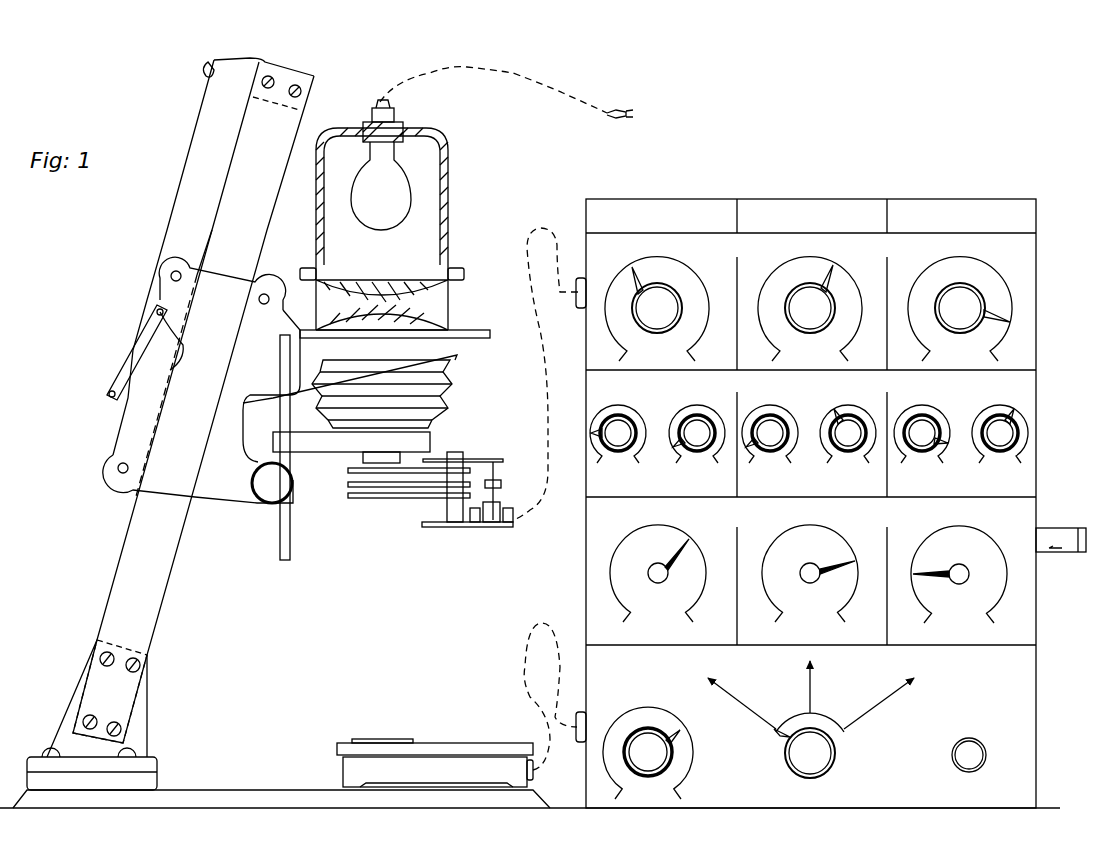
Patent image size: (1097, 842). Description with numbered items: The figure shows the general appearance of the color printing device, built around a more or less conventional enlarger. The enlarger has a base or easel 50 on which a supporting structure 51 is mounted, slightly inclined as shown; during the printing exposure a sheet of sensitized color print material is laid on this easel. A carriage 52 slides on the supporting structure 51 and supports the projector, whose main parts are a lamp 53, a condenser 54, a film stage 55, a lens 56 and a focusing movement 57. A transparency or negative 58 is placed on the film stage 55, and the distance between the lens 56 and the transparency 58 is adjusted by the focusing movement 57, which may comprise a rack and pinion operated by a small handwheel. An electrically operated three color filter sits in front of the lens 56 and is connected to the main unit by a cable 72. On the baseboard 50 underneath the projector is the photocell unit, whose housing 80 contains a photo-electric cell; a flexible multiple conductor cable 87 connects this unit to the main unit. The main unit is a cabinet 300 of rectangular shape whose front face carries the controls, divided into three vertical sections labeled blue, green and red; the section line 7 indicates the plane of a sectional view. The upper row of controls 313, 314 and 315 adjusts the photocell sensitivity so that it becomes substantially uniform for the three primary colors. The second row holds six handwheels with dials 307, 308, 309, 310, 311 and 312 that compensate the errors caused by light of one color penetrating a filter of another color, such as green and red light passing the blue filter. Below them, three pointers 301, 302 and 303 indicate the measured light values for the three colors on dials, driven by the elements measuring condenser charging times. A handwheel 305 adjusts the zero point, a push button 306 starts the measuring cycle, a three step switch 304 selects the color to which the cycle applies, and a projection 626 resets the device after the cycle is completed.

The section line 7 is at (586, 573).
The base or easel 50 is at (216, 775).
The supporting structure 51 is at (128, 812).
The carriage 52 is at (128, 404).
The lamp 53 is at (474, 166).
The condenser 54 is at (408, 293).
The film stage 55 is at (460, 362).
The lens 56 is at (363, 458).
The focusing movement 57 is at (292, 490).
The transparency or negative 58 is at (490, 334).
The cable 72 is at (548, 390).
The housing 80 is at (343, 772).
The flexible multiple conductor cable 87 is at (527, 668).
The cabinet 300 is at (1036, 258).
The pointer 301 is at (658, 573).
The pointer 302 is at (810, 573).
The pointer 303 is at (959, 574).
The three step switch 304 is at (811, 730).
The handwheel 305 is at (648, 744).
The push button 306 is at (969, 756).
The handwheel with associated dial 307 is at (618, 443).
The handwheel with associated dial 308 is at (697, 443).
The handwheel with associated dial 309 is at (770, 443).
The handwheel with associated dial 310 is at (848, 443).
The handwheel with associated dial 311 is at (922, 443).
The handwheel with associated dial 312 is at (1000, 443).
The sensitivity control 313 is at (657, 309).
The sensitivity control 314 is at (810, 309).
The sensitivity control 315 is at (960, 309).
The projection 626 is at (1076, 528).